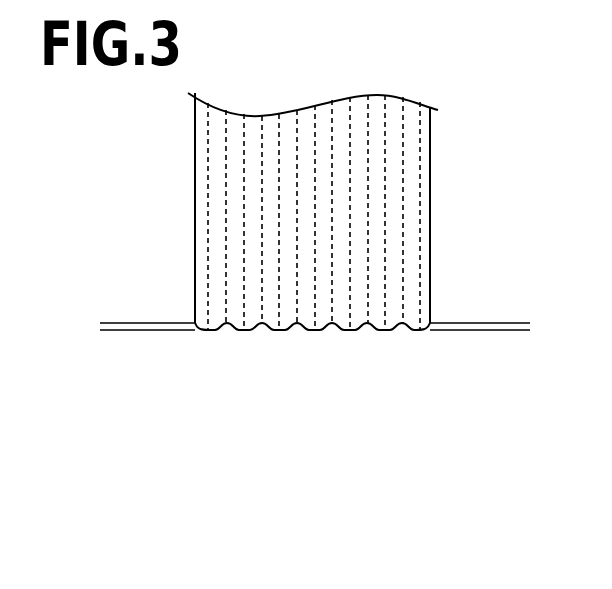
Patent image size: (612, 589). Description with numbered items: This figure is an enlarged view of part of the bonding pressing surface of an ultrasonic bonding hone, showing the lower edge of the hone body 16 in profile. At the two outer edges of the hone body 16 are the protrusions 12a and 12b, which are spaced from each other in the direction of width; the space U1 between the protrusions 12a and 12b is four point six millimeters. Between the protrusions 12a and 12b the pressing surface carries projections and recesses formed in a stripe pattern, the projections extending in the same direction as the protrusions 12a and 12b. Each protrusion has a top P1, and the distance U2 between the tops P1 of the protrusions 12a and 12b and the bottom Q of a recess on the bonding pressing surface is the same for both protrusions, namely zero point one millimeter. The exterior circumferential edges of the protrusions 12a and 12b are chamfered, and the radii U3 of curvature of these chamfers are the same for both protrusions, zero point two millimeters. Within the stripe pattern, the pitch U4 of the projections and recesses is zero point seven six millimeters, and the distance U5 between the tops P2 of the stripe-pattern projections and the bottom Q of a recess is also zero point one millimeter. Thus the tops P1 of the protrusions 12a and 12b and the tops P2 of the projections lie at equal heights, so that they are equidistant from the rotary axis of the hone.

The hone body 16 is at (428, 162).
The protrusion 12a is at (418, 336).
The protrusion 12b is at (207, 332).
The top of protrusion P1 is at (205, 333).
The top of projection of stripe pattern P2 is at (277, 330).
The bottom of recess Q is at (224, 332).
The space between protrusions U1 is at (208, 347).
The distance between protrusion top and recess bottom U2 is at (122, 350).
The radius of curvature of chamfer U3 is at (198, 322).
The pitch of stripe pattern U4 is at (280, 345).
The distance between projection top and recess bottom U5 is at (312, 323).